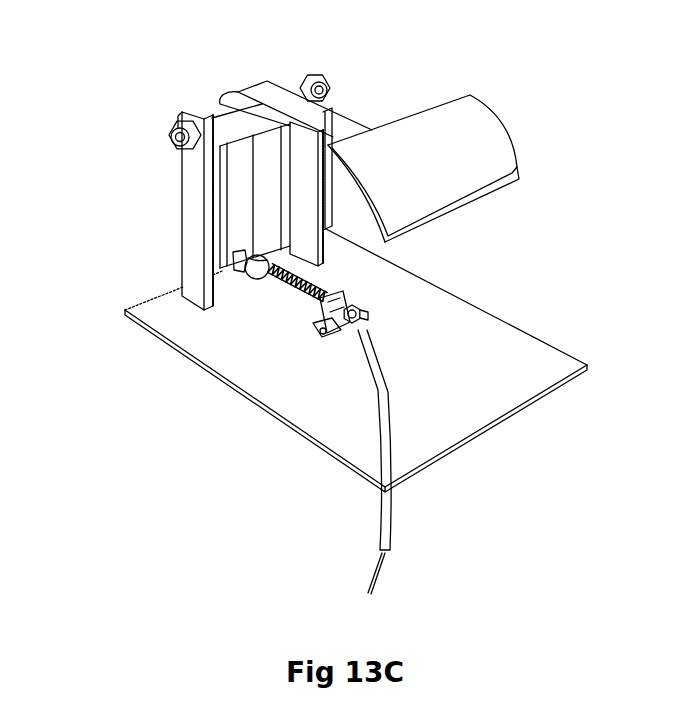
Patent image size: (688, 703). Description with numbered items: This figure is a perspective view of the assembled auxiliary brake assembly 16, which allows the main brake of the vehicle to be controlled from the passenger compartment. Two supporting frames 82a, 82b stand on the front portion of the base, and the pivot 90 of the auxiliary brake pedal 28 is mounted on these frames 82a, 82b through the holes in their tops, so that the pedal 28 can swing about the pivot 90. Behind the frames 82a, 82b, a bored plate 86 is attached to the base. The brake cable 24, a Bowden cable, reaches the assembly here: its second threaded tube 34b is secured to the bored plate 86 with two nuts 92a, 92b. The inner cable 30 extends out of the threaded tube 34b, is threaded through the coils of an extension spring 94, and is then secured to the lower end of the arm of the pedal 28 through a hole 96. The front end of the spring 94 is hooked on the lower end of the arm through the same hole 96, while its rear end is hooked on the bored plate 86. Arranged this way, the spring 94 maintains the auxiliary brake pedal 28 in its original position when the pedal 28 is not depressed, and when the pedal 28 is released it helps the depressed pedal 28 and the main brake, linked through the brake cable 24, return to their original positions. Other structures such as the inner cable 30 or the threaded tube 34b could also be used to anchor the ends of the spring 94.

The auxiliary brake assembly 16 is at (370, 83).
The brake cable 24 is at (383, 385).
The auxiliary brake pedal 28 is at (503, 135).
The inner cable 30 is at (237, 253).
The second threaded tube 34b is at (360, 316).
The supporting frame 82a is at (193, 170).
The supporting frame 82b is at (300, 72).
The bored plate 86 is at (320, 332).
The pivot 90 is at (227, 117).
The nut 92a is at (320, 303).
The nut 92b is at (333, 320).
The extension spring 94 is at (287, 292).
The hole 96 is at (243, 257).